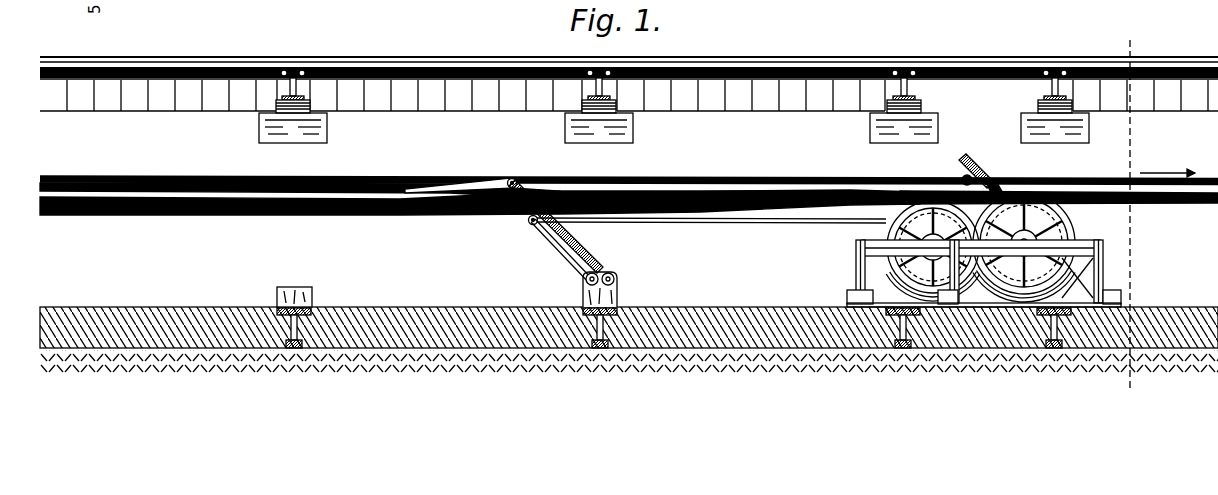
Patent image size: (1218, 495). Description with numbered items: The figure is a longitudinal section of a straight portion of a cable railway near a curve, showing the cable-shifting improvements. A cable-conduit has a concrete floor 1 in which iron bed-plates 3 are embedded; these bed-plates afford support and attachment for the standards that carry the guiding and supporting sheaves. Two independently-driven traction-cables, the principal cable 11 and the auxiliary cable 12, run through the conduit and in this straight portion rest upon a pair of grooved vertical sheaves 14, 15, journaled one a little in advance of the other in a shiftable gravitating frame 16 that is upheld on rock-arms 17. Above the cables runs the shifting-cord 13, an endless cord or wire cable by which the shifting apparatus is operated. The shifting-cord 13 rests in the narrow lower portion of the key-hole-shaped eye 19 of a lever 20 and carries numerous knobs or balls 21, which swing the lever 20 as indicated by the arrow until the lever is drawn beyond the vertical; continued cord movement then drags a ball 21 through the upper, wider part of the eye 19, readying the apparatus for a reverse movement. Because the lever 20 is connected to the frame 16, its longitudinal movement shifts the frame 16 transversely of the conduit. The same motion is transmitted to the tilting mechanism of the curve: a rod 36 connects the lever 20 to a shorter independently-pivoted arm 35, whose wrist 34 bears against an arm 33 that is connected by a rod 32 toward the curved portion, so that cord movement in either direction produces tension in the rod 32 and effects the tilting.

The concrete floor 1 is at (1033, 74).
The iron bed-plates 3 is at (314, 306).
The principal cable 11 is at (115, 216).
The auxiliary cable 12 is at (1190, 228).
The shifting-cord 13 is at (629, 169).
The grooved vertical sheave 14 is at (895, 222).
The grooved vertical sheave 15 is at (1060, 232).
The shiftable gravitating frame 16 is at (1085, 250).
The rock-arms 17 is at (857, 279).
The key-hole-shaped eye 19 is at (973, 160).
The lever 20 is at (998, 188).
The knobs or balls 21 is at (960, 176).
The rod 32 is at (424, 188).
The arm 33 is at (576, 246).
The wrist 34 is at (528, 221).
The shorter independently-pivoted arm 35 is at (556, 244).
The rod 36 is at (709, 232).